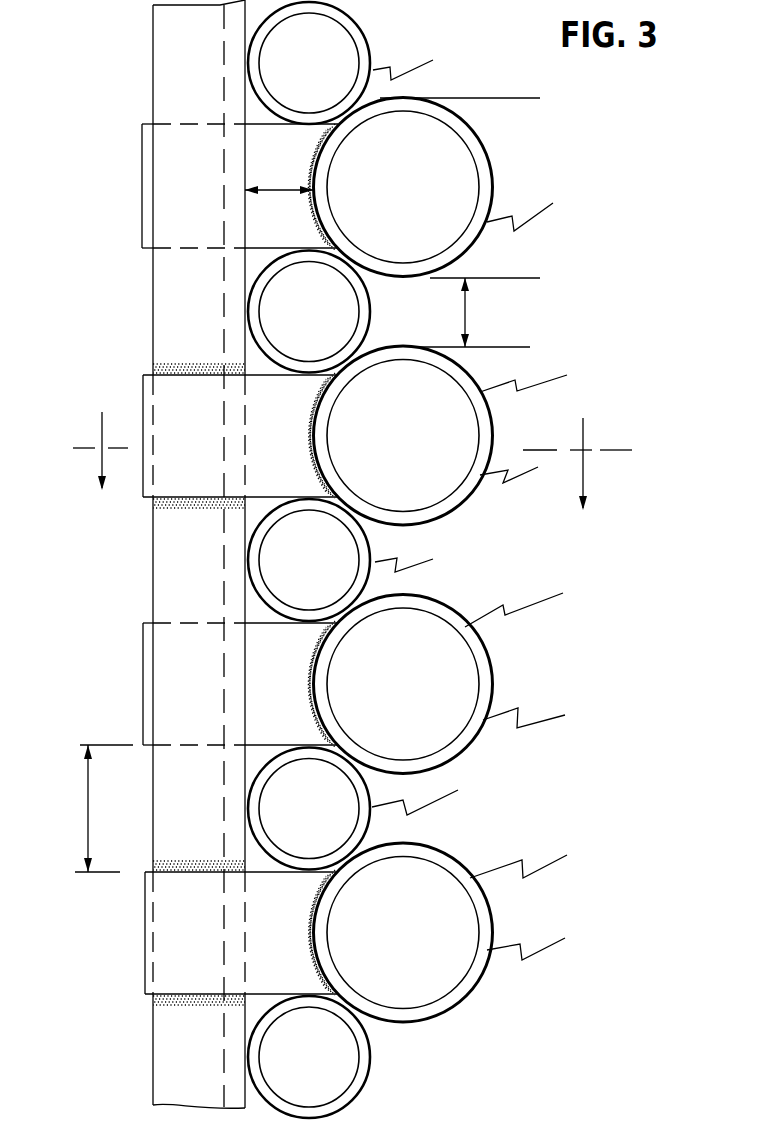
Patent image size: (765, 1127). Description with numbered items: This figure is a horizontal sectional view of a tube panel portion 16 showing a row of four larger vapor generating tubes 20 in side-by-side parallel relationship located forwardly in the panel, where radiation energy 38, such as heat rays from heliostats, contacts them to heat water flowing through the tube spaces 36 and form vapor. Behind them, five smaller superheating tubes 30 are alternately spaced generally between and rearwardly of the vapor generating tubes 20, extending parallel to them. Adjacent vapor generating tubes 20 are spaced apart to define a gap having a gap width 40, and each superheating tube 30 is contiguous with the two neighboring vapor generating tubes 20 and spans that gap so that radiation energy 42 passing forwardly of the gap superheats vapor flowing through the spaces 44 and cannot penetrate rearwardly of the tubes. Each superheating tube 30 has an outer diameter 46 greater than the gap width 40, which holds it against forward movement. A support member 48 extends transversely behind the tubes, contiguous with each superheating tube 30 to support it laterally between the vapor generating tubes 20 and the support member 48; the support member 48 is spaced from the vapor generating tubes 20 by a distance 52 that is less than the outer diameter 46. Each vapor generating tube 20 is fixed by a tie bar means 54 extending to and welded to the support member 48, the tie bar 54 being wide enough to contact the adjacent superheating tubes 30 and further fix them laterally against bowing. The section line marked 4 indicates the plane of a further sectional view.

The tube panel portion 16 is at (112, 137).
The vapor generating tubes 20 is at (427, 107).
The superheating tubes 30 is at (373, 55).
The tube spaces 36 is at (468, 156).
The radiation energy 38 is at (540, 871).
The gap width 40 is at (468, 318).
The radiation energy 42 is at (440, 798).
The spaces 44 is at (288, 519).
The outer diameter 46 is at (130, 828).
The support member 48 is at (153, 553).
The distance 52 is at (283, 186).
The tie bar means 54 is at (142, 203).
The section line 4- 4 is at (352, 461).